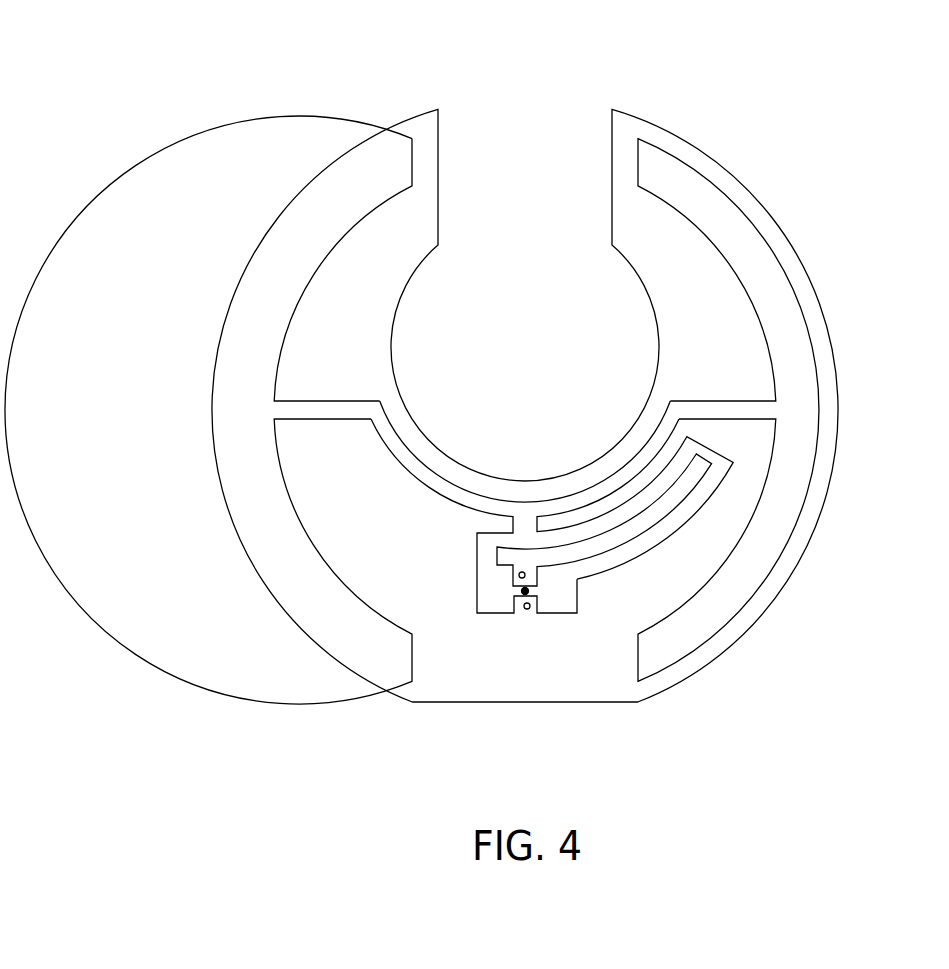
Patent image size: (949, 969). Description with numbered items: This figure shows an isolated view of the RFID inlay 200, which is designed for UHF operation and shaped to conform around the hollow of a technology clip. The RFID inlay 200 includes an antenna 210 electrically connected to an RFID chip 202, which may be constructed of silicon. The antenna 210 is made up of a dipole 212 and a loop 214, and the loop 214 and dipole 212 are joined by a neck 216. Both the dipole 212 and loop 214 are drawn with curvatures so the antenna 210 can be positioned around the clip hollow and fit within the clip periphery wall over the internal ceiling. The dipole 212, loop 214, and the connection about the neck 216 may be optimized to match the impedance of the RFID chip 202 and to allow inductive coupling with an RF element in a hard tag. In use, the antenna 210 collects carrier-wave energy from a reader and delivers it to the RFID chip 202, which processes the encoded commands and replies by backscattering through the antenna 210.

The RFID inlay 200 is at (352, 66).
The RFID chip 202 is at (525, 591).
The antenna 210 is at (715, 450).
The dipole 212 is at (417, 472).
The loop 214 is at (655, 533).
The neck 216 is at (523, 523).